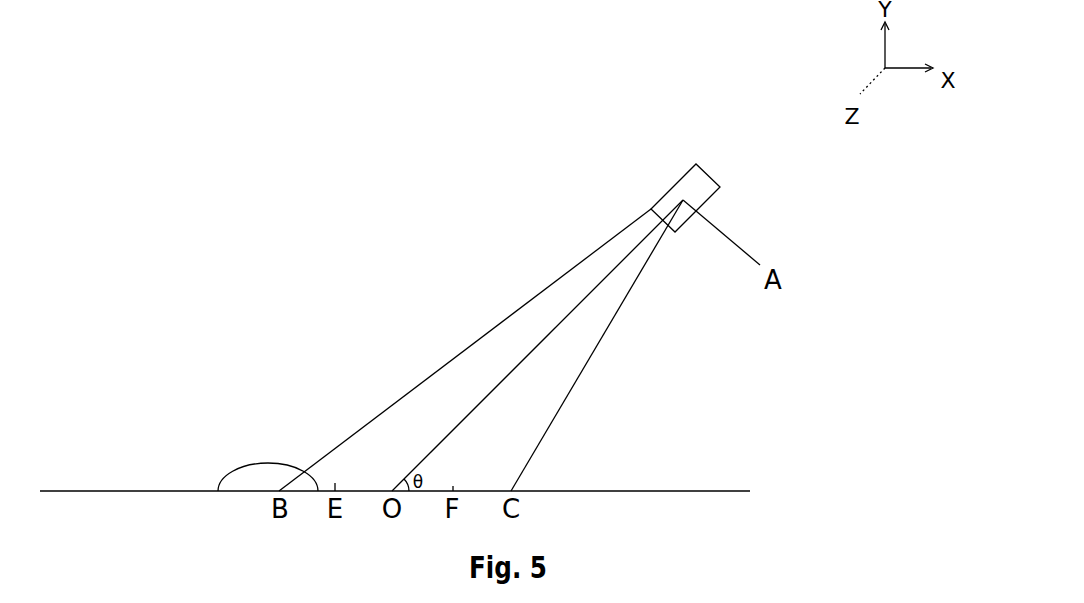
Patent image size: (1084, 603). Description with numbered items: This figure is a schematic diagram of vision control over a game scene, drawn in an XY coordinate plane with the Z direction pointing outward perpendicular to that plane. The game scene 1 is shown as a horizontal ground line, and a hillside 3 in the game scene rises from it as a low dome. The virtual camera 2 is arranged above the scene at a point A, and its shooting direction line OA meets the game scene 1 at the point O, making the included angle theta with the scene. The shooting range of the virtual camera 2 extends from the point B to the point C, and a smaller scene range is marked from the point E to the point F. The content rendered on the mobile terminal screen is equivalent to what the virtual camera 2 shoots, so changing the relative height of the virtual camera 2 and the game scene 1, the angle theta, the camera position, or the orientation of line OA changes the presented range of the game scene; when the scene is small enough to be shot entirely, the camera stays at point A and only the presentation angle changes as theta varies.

The game scene 1 is at (168, 491).
The virtual camera 2 is at (670, 187).
The hillside 3 is at (262, 463).